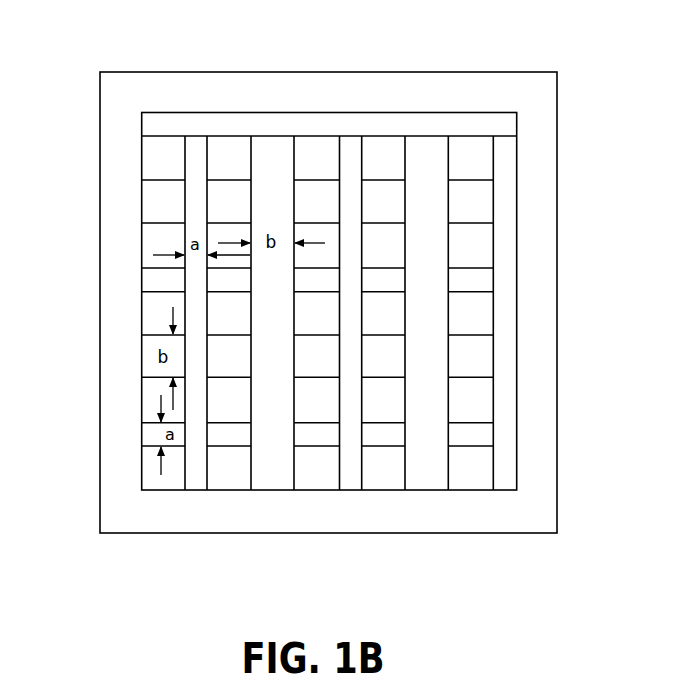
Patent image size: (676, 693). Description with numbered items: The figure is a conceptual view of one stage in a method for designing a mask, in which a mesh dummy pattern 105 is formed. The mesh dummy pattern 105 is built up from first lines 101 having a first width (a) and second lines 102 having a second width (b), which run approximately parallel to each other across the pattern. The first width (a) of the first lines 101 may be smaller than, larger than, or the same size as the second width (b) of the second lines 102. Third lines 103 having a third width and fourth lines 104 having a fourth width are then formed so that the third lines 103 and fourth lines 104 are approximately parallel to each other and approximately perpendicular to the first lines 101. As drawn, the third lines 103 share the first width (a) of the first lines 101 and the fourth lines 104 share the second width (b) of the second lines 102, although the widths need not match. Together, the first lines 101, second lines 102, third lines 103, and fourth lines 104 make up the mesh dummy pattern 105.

The first lines 101 is at (142, 122).
The second lines 102 is at (148, 196).
The third lines 103 is at (197, 490).
The fourth lines 104 is at (270, 490).
The mesh dummy pattern 105 is at (481, 96).